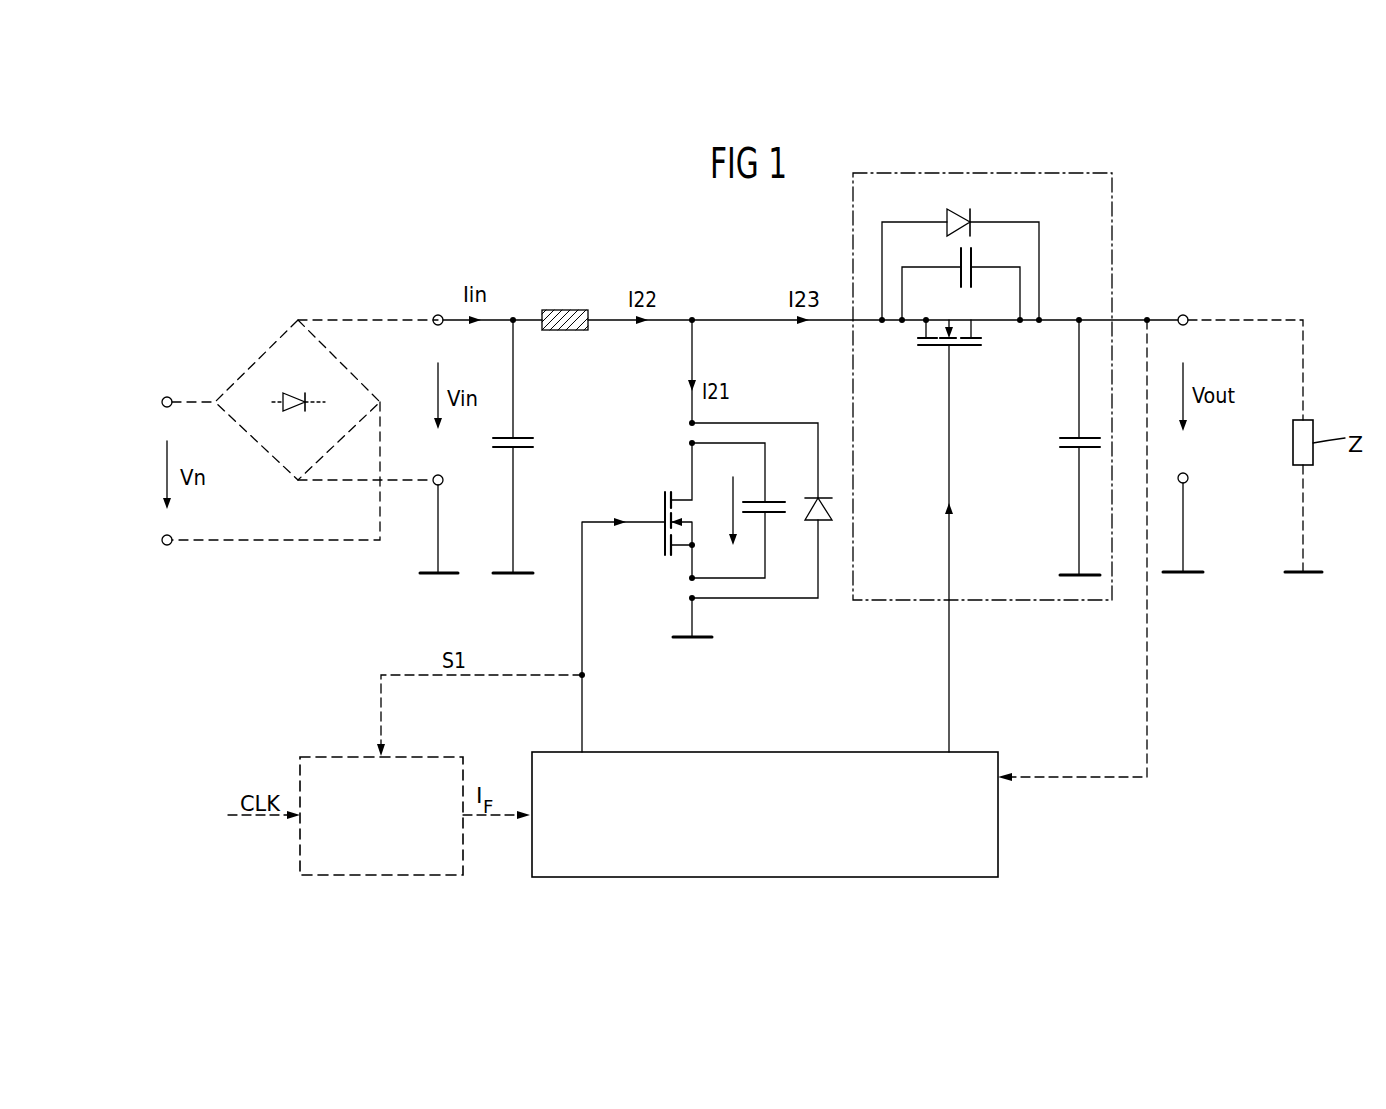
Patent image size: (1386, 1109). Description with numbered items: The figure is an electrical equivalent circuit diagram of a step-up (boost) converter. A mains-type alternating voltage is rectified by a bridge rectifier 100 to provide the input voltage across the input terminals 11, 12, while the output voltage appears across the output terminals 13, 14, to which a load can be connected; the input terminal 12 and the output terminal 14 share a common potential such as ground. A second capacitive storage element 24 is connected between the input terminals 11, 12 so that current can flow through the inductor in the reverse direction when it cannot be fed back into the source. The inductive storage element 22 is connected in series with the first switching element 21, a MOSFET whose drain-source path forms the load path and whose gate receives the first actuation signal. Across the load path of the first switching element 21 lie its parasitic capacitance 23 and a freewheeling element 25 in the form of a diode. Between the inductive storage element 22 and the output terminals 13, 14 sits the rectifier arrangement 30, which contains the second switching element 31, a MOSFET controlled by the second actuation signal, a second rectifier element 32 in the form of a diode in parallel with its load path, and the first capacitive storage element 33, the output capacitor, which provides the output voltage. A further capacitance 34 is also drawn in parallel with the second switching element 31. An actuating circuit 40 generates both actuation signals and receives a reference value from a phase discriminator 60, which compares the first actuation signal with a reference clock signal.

The bridge rectifier 100 is at (268, 350).
The input terminal 11 is at (435, 313).
The input terminal 12 is at (441, 484).
The output terminal 13 is at (1184, 313).
The output terminal 14 is at (1189, 477).
The first switching element 21 is at (665, 497).
The inductive storage element 22 is at (563, 305).
The parasitic capacitance 23 is at (772, 497).
The second capacitive storage element 24 is at (518, 435).
The freewheeling element 25 is at (810, 527).
The rectifier arrangement 30 is at (1030, 462).
The second switching element 31 is at (930, 350).
The second rectifier element 32 is at (974, 213).
The first capacitive storage element 33 is at (1071, 435).
The capacitor 34 is at (974, 257).
The actuating circuit 40 is at (1000, 845).
The phase discriminator 60 is at (387, 878).